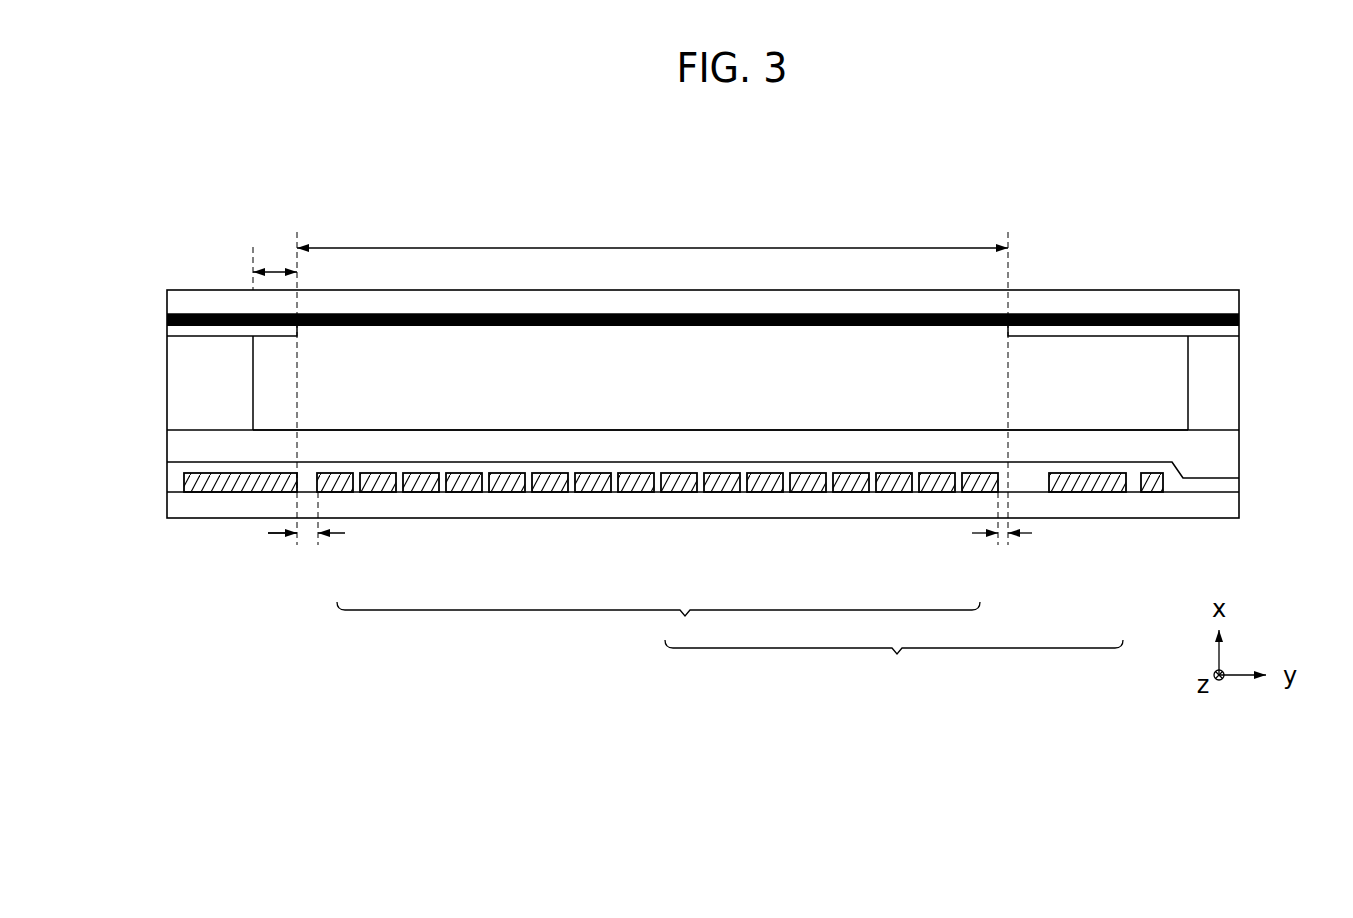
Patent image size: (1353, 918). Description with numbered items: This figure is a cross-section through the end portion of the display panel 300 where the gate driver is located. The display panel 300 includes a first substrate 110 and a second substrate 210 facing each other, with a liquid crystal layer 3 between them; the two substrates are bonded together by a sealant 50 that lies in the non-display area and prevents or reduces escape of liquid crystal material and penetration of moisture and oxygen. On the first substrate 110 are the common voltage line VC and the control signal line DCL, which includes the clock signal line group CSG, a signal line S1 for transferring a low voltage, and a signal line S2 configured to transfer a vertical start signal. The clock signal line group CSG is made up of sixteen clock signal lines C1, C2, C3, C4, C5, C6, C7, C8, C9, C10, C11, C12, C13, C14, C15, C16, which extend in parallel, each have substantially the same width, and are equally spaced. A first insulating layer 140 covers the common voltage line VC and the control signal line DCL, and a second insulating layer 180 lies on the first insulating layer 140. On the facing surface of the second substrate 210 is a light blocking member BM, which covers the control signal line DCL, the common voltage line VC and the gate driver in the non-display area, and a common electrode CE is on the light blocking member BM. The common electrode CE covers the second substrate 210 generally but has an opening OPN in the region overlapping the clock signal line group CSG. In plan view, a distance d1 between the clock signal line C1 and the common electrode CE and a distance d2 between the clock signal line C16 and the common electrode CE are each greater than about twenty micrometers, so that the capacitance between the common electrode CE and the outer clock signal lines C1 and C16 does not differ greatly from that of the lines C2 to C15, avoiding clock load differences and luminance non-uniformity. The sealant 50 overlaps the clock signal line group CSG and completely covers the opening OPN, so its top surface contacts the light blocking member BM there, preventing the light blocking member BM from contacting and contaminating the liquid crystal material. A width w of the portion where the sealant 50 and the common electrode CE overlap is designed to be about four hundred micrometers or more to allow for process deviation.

The display panel 300 is at (1070, 187).
The second substrate 210 is at (1238, 302).
The light blocking member BM is at (1240, 322).
The common electrode CE is at (193, 331).
The liquid crystal layer 3 is at (1218, 376).
The sealant 50 is at (1177, 392).
The second insulating layer 180 is at (1234, 446).
The first insulating layer 140 is at (1236, 486).
The first substrate 110 is at (1237, 507).
The common voltage line VC is at (221, 492).
The clock signal line C1 is at (348, 492).
The clock signal line C2 is at (382, 492).
The clock signal line C3 is at (425, 492).
The clock signal line C4 is at (467, 492).
The clock signal line C5 is at (510, 492).
The clock signal line C6 is at (553, 492).
The clock signal line C7 is at (596, 492).
The clock signal line C8 is at (639, 492).
The clock signal line C9 is at (682, 492).
The clock signal line C10 is at (724, 492).
The clock signal line C11 is at (768, 492).
The clock signal line C12 is at (812, 492).
The clock signal line C13 is at (853, 492).
The clock signal line C14 is at (897, 492).
The clock signal line C15 is at (942, 492).
The clock signal line C16 is at (980, 492).
The first signal line S1 is at (1090, 492).
The signal line S2 is at (1154, 492).
The clock signal line group CSG is at (658, 625).
The control signal line DCL is at (894, 663).
The opening OPN is at (652, 379).
The width w is at (275, 266).
The distance d1 is at (306, 535).
The distance d2 is at (1002, 535).